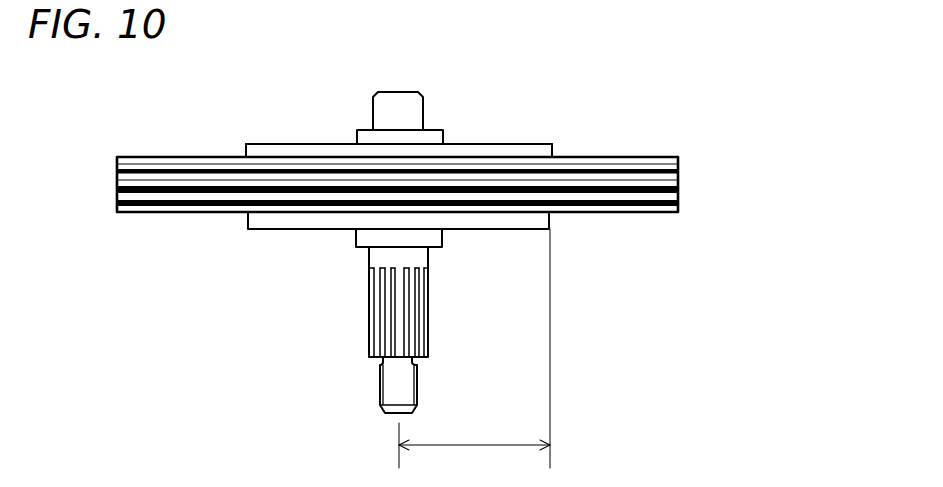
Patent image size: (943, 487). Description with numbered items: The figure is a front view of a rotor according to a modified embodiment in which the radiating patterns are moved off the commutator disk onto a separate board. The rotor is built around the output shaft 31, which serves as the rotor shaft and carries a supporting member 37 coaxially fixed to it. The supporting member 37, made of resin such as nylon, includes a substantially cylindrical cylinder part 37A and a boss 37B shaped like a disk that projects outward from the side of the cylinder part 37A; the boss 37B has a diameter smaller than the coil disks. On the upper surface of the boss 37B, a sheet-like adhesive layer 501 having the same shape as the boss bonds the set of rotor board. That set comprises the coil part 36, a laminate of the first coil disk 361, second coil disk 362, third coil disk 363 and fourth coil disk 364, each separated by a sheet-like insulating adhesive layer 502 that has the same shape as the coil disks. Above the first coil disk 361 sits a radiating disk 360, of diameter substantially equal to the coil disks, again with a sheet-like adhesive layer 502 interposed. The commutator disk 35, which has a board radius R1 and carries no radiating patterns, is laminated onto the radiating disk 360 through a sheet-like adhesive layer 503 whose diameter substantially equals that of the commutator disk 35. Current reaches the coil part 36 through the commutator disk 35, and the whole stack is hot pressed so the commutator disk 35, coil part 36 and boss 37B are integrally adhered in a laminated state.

The output shaft 31 is at (408, 313).
The commutator disk 35 is at (540, 147).
The coil part 36 is at (395, 193).
The radiating disk 360 is at (680, 160).
The first coil disk 361 is at (680, 171).
The second coil disk 362 is at (679, 185).
The third coil disk 363 is at (679, 197).
The fourth coil disk 364 is at (668, 211).
The supporting member 37 is at (440, 202).
The cylinder part 37A is at (442, 134).
The boss 37B is at (549, 224).
The sheet-like adhesive layer 501 is at (262, 214).
The sheet-like adhesive layer 502 is at (395, 210).
The sheet-like adhesive layer 503 is at (245, 154).
The board radius R1 is at (474, 352).